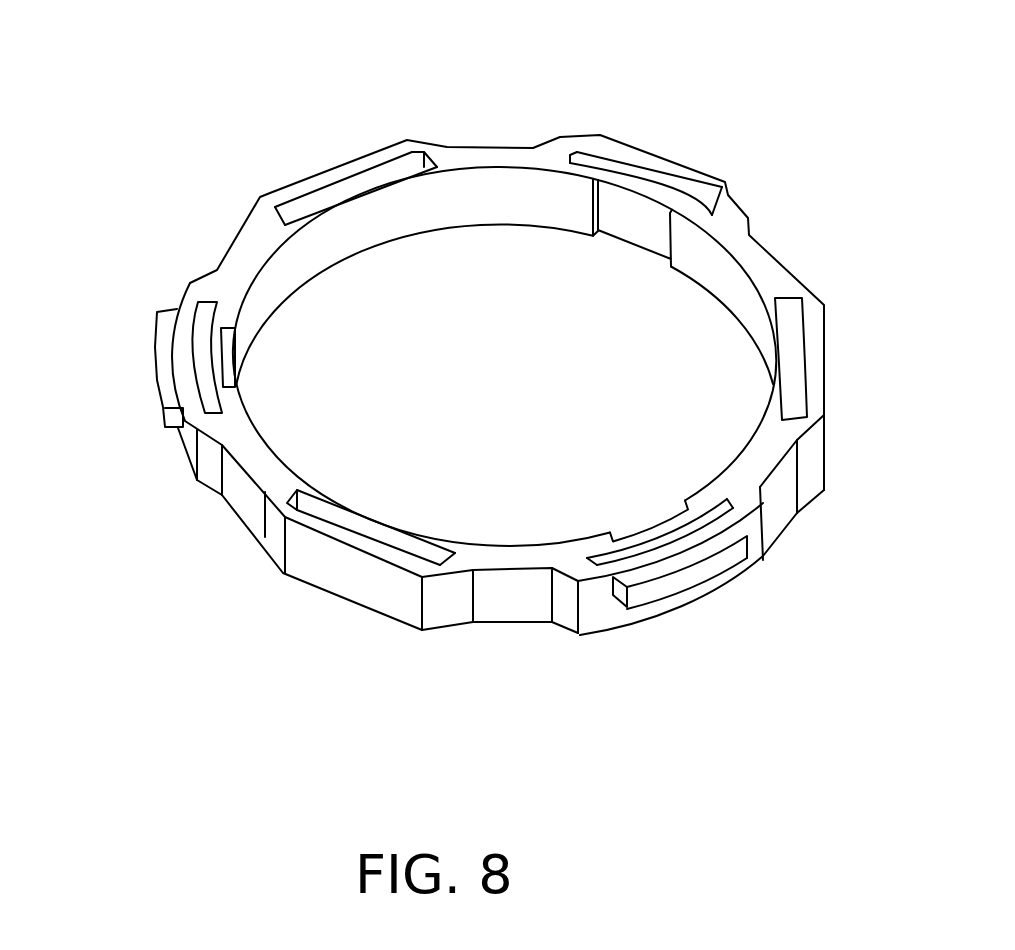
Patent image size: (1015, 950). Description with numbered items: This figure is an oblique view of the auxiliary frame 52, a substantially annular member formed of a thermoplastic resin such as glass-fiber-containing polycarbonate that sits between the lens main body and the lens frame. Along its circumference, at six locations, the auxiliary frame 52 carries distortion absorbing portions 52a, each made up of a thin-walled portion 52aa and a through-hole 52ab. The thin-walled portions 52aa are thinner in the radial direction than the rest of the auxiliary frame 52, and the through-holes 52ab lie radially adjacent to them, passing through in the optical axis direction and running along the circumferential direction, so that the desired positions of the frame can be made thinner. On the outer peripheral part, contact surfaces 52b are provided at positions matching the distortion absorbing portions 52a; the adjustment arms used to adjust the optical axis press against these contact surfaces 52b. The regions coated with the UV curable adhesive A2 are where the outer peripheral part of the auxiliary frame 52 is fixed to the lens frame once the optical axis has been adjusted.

The auxiliary frame 52 is at (490, 157).
The distortion absorbing portion 52a is at (390, 147).
The contact surface 52b is at (356, 156).
The thin-walled portion 52aa is at (312, 185).
The through-hole 52ab is at (305, 200).
The adhesive A2 is at (715, 183).